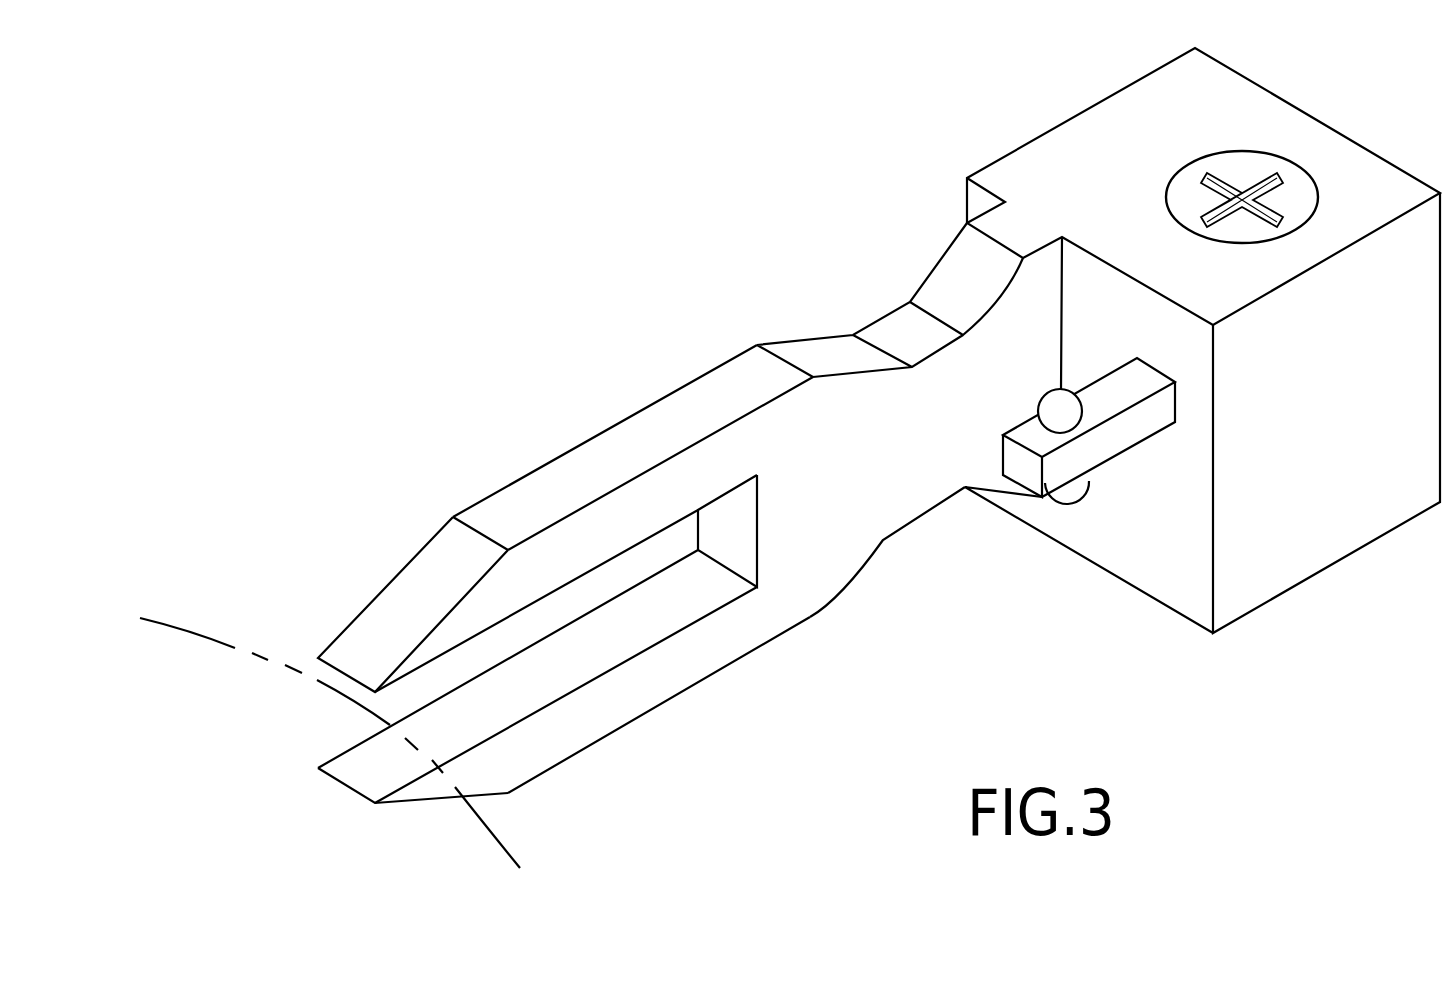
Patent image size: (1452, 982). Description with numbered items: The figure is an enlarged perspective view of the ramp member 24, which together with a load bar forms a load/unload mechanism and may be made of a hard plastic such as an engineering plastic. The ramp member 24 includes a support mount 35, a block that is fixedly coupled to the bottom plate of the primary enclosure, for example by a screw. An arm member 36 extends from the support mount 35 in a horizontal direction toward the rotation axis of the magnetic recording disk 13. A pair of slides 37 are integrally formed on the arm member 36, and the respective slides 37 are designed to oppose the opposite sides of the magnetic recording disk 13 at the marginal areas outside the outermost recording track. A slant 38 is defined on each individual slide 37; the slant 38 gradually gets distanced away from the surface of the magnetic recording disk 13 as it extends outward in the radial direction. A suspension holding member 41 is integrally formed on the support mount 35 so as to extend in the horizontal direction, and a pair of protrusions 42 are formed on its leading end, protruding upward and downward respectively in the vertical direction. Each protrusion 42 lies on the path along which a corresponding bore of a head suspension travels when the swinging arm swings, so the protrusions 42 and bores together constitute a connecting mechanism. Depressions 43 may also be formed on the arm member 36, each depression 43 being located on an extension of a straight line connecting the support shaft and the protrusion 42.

The magnetic recording disk 13 is at (512, 857).
The ramp member 24 is at (980, 135).
The support mount 35 is at (1407, 525).
The arm member 36 is at (983, 213).
The slides 37 is at (592, 437).
The slant 38 is at (393, 580).
The suspension holding member 41 is at (1147, 428).
The protrusions 42 is at (1052, 402).
The depressions 43 is at (810, 337).